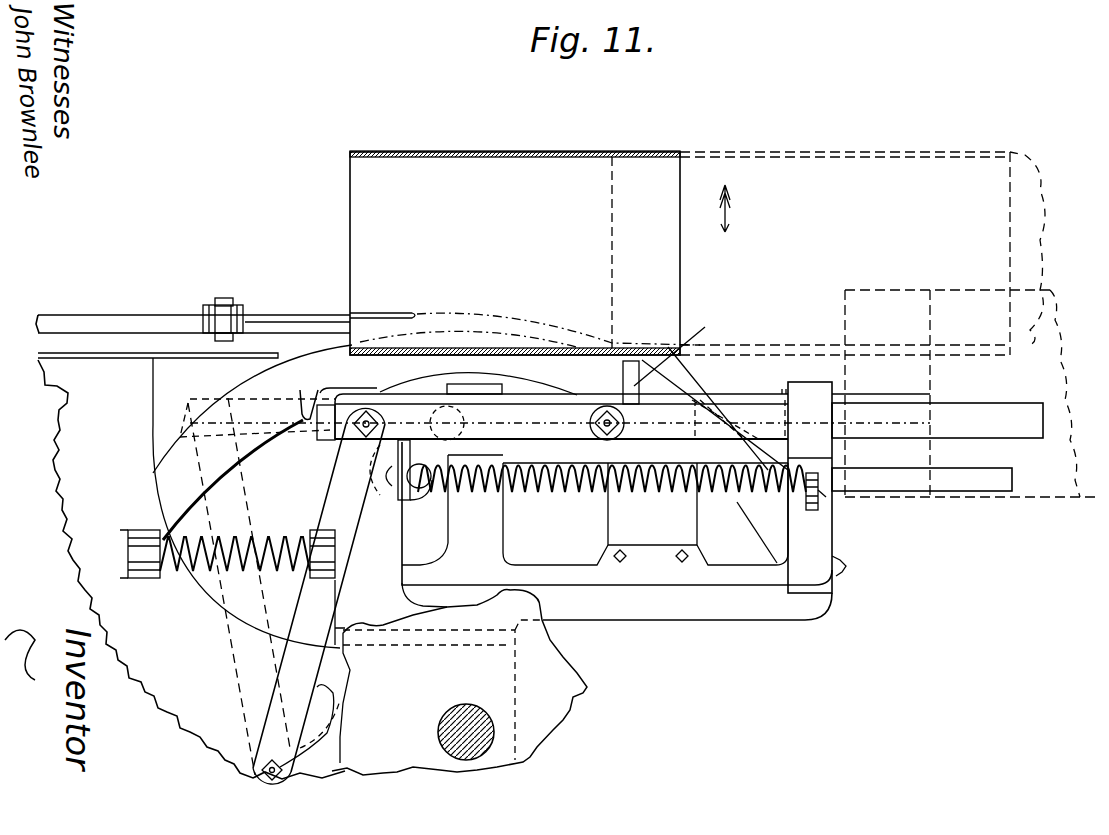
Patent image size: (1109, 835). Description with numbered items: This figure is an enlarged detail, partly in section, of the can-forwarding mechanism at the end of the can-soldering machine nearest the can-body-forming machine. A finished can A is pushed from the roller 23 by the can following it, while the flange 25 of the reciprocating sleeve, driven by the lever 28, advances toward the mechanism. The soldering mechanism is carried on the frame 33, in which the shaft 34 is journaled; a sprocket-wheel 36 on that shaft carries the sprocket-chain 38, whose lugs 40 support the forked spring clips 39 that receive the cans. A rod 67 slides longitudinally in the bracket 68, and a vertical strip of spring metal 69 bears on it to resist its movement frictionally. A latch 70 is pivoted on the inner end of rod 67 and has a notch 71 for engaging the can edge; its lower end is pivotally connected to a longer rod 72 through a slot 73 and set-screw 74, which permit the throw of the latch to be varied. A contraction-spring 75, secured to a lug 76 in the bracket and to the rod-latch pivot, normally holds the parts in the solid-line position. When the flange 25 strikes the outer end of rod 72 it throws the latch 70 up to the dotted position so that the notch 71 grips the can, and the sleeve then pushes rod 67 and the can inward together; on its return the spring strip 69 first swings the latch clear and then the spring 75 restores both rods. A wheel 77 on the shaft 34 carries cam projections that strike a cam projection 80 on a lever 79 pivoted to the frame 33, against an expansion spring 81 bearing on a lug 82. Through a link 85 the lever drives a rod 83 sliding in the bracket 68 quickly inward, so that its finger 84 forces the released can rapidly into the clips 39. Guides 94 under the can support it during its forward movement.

The finished can A is at (525, 253).
The roller or cylinder 23 is at (862, 253).
The flange 25 is at (972, 393).
The lever 28 is at (439, 670).
The frame 33 is at (195, 562).
The shaft 34 is at (483, 723).
The sprocket-wheel 36 is at (766, 513).
The sprocket-chain 38 is at (106, 327).
The clips 39 is at (288, 314).
The lugs 40 is at (218, 320).
The rod 67 is at (741, 398).
The bracket 68 is at (609, 510).
The vertical strip of spring metal 69 is at (652, 504).
The latch 70 is at (300, 446).
The notch 71 is at (306, 408).
The rod 72 is at (980, 482).
The slot 73 is at (414, 488).
The set-screw 74 is at (393, 490).
The spring 75 is at (577, 495).
The lug 76 is at (822, 496).
The wheel 77 is at (459, 682).
The lever 79 is at (236, 492).
The cam projection 80 is at (325, 728).
The spring 81 is at (267, 538).
The lug 82 is at (142, 540).
The rod 83 is at (937, 416).
The finger 84 is at (535, 349).
The link 85 is at (232, 399).
The guides 94 is at (207, 360).